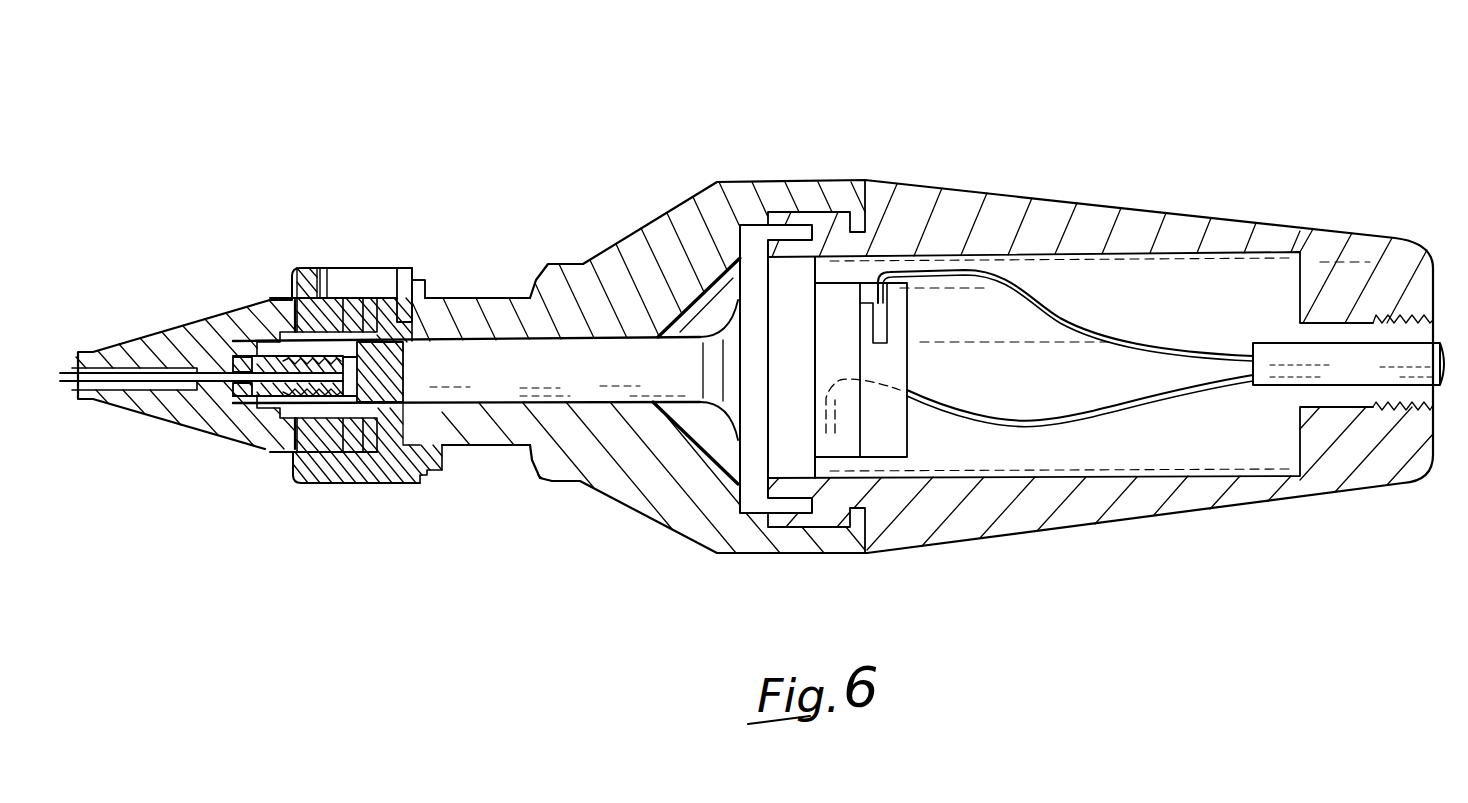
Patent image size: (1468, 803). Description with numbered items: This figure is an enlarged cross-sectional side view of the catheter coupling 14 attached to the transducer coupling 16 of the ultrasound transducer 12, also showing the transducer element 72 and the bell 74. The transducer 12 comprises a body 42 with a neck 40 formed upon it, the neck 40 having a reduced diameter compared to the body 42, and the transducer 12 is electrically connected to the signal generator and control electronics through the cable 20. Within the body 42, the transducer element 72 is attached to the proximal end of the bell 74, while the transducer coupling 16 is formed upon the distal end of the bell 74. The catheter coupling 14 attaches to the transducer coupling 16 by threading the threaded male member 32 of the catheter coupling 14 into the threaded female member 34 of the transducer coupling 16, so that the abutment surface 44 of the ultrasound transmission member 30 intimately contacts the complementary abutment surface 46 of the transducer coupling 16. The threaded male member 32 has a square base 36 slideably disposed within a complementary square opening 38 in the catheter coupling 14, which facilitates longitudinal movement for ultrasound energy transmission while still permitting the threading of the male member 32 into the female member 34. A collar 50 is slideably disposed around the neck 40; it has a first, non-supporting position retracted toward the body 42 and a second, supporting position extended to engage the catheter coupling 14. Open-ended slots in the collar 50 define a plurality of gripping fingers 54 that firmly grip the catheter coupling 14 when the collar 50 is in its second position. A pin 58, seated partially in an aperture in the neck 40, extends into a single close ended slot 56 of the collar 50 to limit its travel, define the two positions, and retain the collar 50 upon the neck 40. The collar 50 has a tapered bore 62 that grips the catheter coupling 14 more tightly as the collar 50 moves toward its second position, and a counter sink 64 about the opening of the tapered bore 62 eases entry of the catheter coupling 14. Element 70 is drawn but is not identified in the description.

The ultrasound transducer 12 is at (1084, 168).
The catheter coupling 14 is at (225, 350).
The transducer coupling 16 is at (337, 278).
The cable 20 is at (1445, 338).
The ultrasound transmission member 30 is at (64, 400).
The threaded male member 32 is at (408, 351).
The threaded female member 34 is at (412, 382).
The square base 36 is at (245, 325).
The square opening 38 is at (258, 418).
The neck 40 is at (325, 345).
The body 42 is at (655, 518).
The abutment surface 44 is at (428, 473).
The abutment surface 46 is at (245, 357).
The collar 50 is at (357, 485).
The gripping fingers 54 is at (290, 270).
The close ended slot 56 is at (312, 352).
The pin 58 is at (405, 268).
The tapered bore 62 is at (403, 405).
The counter sink 64 is at (292, 452).
The ferrule 70 is at (230, 398).
The transducer element 72 is at (880, 462).
The bell 74 is at (606, 337).